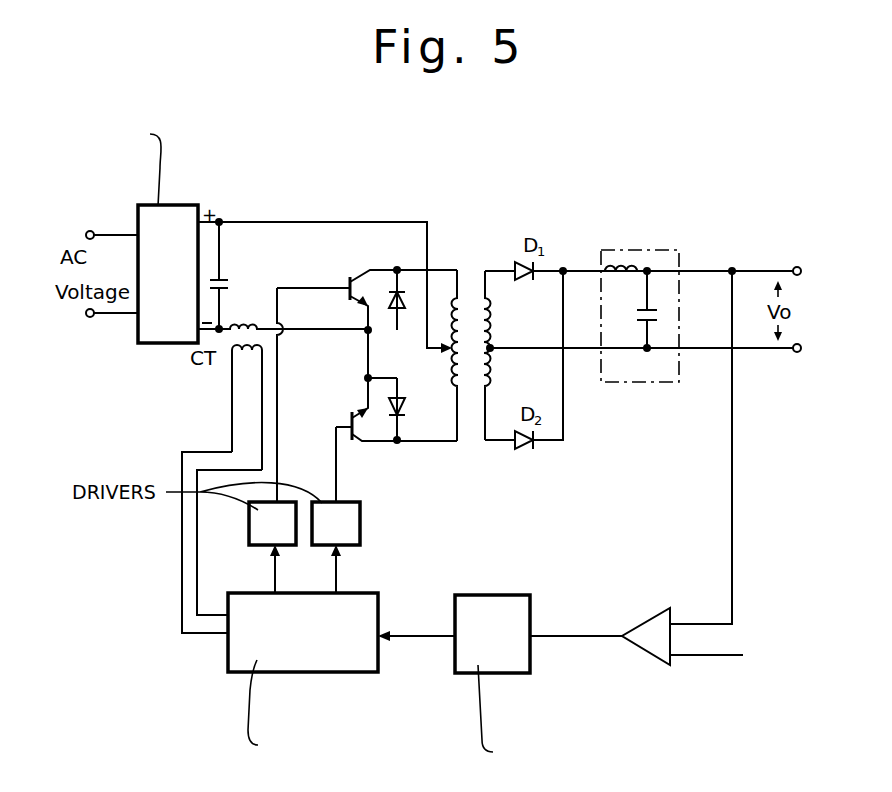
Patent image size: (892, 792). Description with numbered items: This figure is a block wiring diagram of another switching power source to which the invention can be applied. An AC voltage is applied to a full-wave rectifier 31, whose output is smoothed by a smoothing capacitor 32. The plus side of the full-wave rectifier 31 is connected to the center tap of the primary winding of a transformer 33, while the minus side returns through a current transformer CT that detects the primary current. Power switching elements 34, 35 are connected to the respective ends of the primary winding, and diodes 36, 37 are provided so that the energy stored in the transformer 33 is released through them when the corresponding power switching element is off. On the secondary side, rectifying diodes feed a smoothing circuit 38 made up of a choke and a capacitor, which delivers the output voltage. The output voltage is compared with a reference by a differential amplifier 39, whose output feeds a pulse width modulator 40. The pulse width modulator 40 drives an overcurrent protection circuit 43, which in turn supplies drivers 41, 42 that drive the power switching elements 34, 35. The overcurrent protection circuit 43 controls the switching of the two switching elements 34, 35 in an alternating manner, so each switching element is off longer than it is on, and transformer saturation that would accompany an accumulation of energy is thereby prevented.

The full-wave rectifier 31 is at (174, 207).
The smoothing capacitor 32 is at (222, 283).
The transformer 33 is at (477, 270).
The power switching element 34 is at (370, 270).
The power switching element 35 is at (358, 443).
The diode 36 is at (403, 298).
The diode 37 is at (405, 420).
The LC filter 38 is at (653, 250).
The differential amplifier 39 is at (650, 612).
The pulse width modulator 40 is at (495, 596).
The driver 41 is at (250, 528).
The driver 42 is at (360, 540).
The overcurrent protection circuit 43 is at (327, 655).